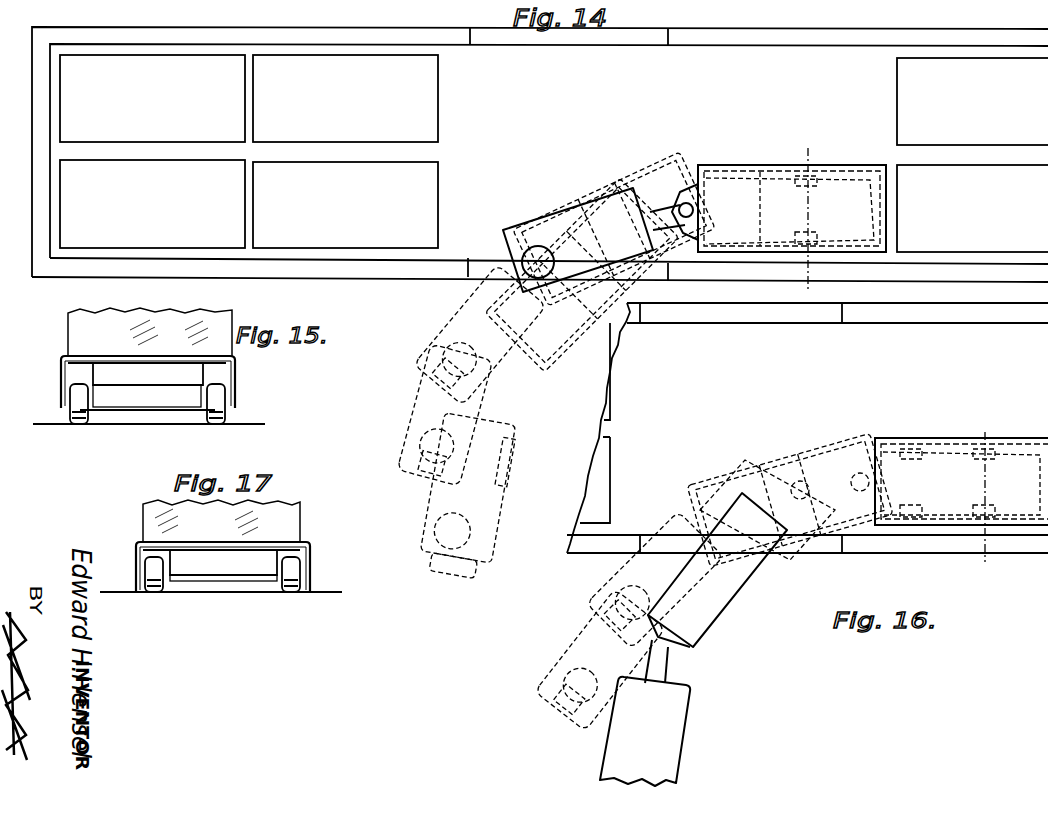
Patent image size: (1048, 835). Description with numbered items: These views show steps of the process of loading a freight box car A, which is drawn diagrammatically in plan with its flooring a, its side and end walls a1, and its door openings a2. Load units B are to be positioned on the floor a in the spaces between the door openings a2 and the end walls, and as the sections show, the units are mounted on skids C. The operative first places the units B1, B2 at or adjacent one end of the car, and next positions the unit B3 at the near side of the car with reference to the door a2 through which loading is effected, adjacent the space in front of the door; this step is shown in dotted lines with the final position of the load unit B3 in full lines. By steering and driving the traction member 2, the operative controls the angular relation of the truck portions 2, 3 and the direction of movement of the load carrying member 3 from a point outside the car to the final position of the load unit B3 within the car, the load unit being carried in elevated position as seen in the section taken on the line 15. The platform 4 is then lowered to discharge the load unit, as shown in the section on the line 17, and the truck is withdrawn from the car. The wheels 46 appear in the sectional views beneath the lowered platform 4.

In FIG. 14, the traction member 2 is at (520, 232).
In FIG. 16, the traction member 2 is at (715, 490).
In FIG. 14, the load carrying member 3 is at (830, 185).
In FIG. 16, the load carrying member 3 is at (960, 448).
In FIG. 15, the platform 4 is at (124, 361).
In FIG. 17, the platform 4 is at (197, 549).
In FIG. 15, the wheels 46 is at (79, 424).
In FIG. 17, the wheels 46 is at (154, 593).
In FIG. 14, the section line 15— 15 is at (808, 217).
In FIG. 16, the section line 17— 17 is at (985, 500).
In FIG. 14, the freight box car A is at (809, 99).
In FIG. 16, the freight box car A is at (854, 373).
In FIG. 14, the load units B is at (483, 151).
In FIG. 14, the load unit B1 is at (972, 101).
In FIG. 14, the load unit B2 is at (972, 208).
In FIG. 14, the load unit B3 is at (545, 372).
In FIG. 15, the load unit B3 is at (233, 320).
In FIG. 17, the load unit B3 is at (300, 522).
In FIG. 16, the load unit B3 is at (1037, 421).
In FIG. 15, the skids C is at (236, 381).
In FIG. 17, the skids C is at (311, 548).
In FIG. 14, the flooring a is at (549, 154).
In FIG. 15, the flooring a is at (122, 425).
In FIG. 17, the flooring a is at (112, 592).
In FIG. 16, the flooring a is at (807, 429).
In FIG. 14, the side and end walls a1 is at (32, 173).
In FIG. 16, the side and end walls a1 is at (562, 556).
In FIG. 14, the door openings a2 is at (655, 26).
In FIG. 16, the door openings a2 is at (840, 300).